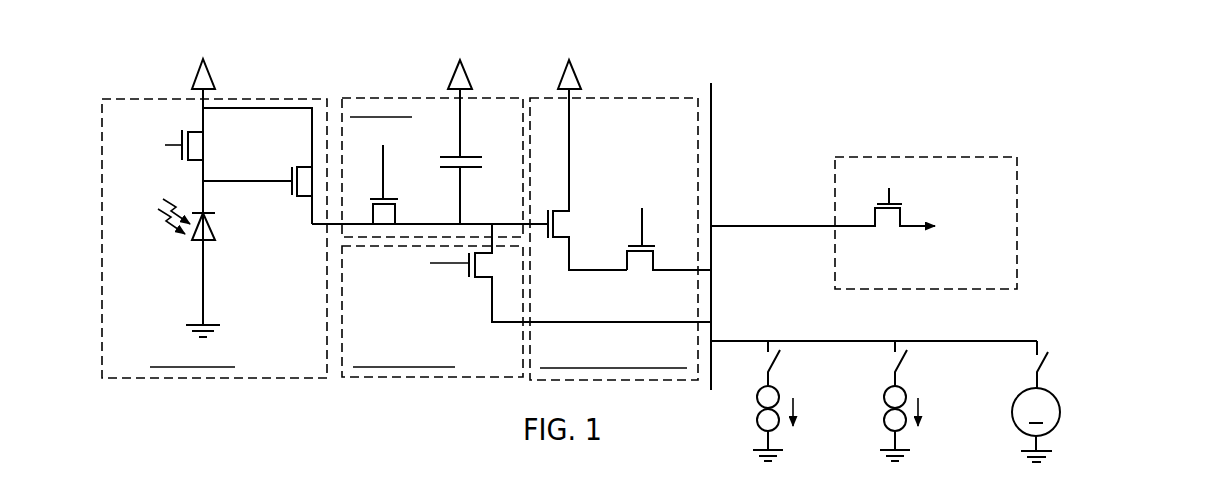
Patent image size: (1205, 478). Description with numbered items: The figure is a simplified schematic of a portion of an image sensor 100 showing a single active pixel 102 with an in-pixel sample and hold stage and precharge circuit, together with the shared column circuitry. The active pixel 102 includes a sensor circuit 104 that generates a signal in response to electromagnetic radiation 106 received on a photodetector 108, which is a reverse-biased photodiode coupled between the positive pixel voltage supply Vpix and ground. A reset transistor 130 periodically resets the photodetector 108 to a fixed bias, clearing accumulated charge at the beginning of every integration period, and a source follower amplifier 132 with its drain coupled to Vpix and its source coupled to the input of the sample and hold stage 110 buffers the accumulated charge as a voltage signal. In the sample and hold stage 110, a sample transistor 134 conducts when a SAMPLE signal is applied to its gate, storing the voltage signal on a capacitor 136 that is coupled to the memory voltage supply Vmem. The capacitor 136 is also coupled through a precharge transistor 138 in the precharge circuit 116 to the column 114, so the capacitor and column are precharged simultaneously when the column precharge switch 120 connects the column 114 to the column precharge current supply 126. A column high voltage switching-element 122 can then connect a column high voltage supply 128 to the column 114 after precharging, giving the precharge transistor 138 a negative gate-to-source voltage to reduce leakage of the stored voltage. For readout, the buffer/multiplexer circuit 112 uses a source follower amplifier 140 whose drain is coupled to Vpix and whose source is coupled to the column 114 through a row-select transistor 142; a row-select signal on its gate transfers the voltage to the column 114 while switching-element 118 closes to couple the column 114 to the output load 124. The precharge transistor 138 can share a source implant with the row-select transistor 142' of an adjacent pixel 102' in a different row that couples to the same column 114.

The image sensor 100 is at (1053, 96).
The active pixel 102 is at (453, 206).
The adjacent pixel 102' is at (864, 223).
The sensor circuit 104 is at (298, 367).
The electromagnetic radiation 106 is at (148, 206).
The photodetector 108 is at (220, 232).
The sample and hold stage 110 is at (448, 120).
The buffer/multiplexer circuit 112 is at (685, 355).
The column 114 is at (712, 187).
The precharge circuit 116 is at (505, 369).
The switching-element 118 is at (791, 346).
The column precharge switch 120 is at (916, 346).
The column high voltage switching-element 122 is at (1062, 348).
The output load 124 is at (757, 405).
The column precharge current supply 126 is at (884, 405).
The column high voltage supply 128 is at (1013, 425).
The reset transistor 130 is at (212, 146).
The source follower amplifier 132 is at (286, 176).
The sample transistor 134 is at (410, 212).
The capacitor 136 is at (484, 144).
The precharge transistor 138 is at (475, 290).
The source follower amplifier 140 is at (577, 213).
The row-select transistor 142 is at (645, 260).
The row-select transistor of adjacent pixel 142' is at (839, 197).